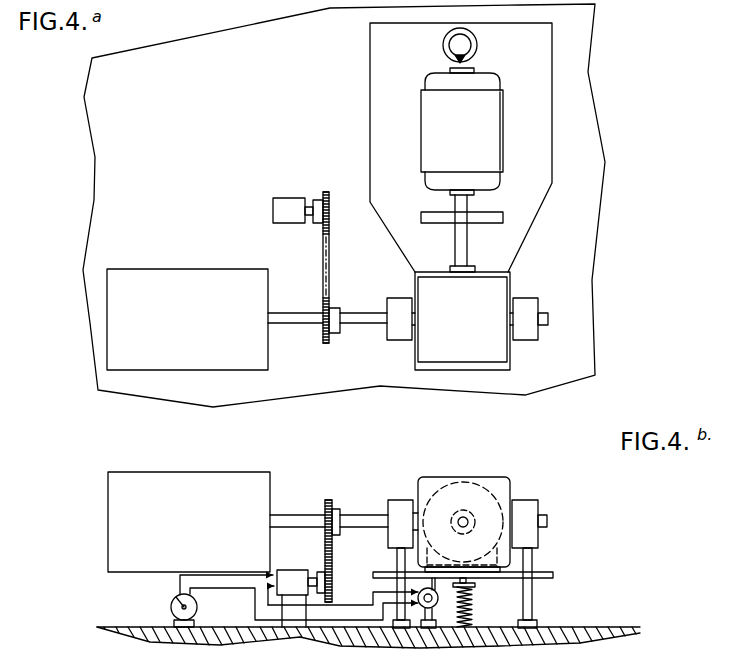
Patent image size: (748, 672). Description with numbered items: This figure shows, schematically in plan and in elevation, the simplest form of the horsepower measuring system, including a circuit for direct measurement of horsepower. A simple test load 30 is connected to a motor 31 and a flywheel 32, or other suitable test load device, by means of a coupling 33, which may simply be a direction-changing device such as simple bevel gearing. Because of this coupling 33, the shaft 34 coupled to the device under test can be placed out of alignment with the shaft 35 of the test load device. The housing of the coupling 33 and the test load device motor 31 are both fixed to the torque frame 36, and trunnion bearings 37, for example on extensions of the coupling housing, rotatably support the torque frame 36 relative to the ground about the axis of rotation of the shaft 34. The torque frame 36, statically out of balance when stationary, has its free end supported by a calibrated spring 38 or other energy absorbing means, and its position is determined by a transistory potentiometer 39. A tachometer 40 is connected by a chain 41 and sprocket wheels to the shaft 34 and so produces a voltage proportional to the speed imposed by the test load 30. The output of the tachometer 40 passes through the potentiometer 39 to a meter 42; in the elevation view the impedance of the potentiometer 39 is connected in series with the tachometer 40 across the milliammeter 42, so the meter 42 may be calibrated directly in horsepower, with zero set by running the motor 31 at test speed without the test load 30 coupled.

In FIG. 4a, the test load 30 is at (196, 328).
In FIG. 4b, the test load 30 is at (201, 528).
In FIG. 4a, the motor 31 is at (470, 143).
In FIG. 4b, the motor 31 is at (466, 478).
In FIG. 4a, the flywheel 32 is at (503, 213).
In FIG. 4b, the flywheel 32 is at (436, 490).
In FIG. 4a, the coupling 33 is at (471, 333).
In FIG. 4b, the coupling 33 is at (505, 482).
In FIG. 4a, the shaft 34 is at (353, 313).
In FIG. 4b, the shaft 34 is at (352, 515).
In FIG. 4a, the shaft 35 is at (456, 246).
In FIG. 4a, the torque frame 36 is at (374, 107).
In FIG. 4b, the torque frame 36 is at (555, 572).
In FIG. 4a, the trunnion bearings 37 is at (532, 300).
In FIG. 4b, the trunnion bearings 37 is at (395, 533).
In FIG. 4b, the calibrated spring 38 is at (476, 601).
In FIG. 4b, the potentiometer 39 is at (432, 612).
In FIG. 4a, the tachometer 40 is at (285, 197).
In FIG. 4b, the tachometer 40 is at (290, 572).
In FIG. 4a, the chain 41 is at (322, 268).
In FIG. 4b, the chain 41 is at (332, 558).
In FIG. 4b, the meter 42 is at (171, 604).